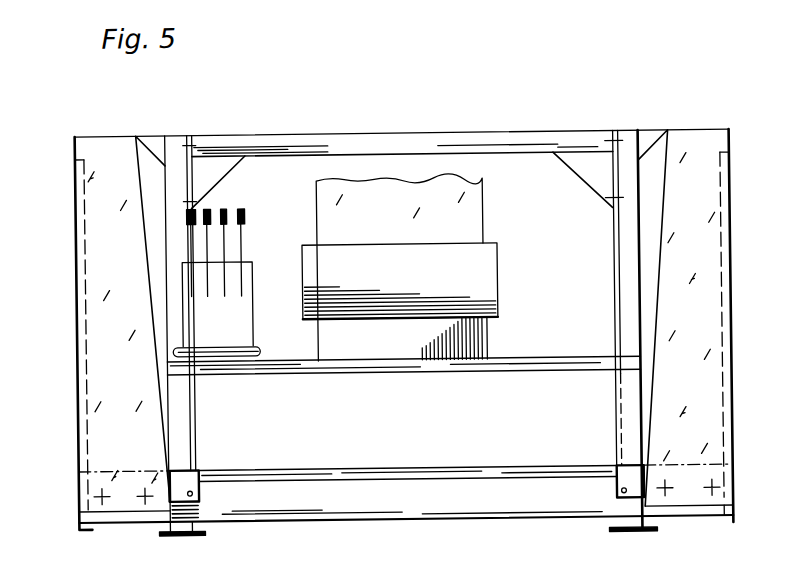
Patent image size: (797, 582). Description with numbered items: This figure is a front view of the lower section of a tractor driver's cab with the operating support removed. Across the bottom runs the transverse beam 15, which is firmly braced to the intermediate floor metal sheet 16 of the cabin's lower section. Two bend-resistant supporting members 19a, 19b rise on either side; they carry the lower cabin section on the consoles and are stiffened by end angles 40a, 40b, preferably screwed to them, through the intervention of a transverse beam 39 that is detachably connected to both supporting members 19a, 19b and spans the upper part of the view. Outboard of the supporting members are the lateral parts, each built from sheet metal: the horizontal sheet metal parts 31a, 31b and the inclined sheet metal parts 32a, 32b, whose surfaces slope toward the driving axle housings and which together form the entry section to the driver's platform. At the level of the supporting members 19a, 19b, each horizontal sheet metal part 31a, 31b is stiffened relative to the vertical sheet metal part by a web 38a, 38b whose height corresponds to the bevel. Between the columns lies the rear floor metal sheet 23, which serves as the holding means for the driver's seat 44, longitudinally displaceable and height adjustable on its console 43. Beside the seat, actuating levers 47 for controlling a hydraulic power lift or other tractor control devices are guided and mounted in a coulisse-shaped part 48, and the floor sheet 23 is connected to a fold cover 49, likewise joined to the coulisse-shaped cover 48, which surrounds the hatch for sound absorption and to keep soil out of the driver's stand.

The transverse beam 15 is at (416, 516).
The intermediate floor metal sheet 16 is at (321, 477).
The bend-resistant supporting member 19a is at (635, 278).
The bend-resistant supporting member 19b is at (173, 244).
The rear floor metal sheet 23 is at (389, 366).
The horizontal sheet metal part 31a is at (708, 127).
The horizontal sheet metal part 31b is at (102, 140).
The inclined sheet metal part 32a is at (708, 333).
The inclined sheet metal part 32b is at (104, 324).
The web 38a is at (699, 490).
The web 38b is at (104, 483).
The transverse beam 39 is at (455, 134).
The end angle 40a is at (596, 180).
The end angle 40b is at (219, 177).
The console 43 is at (481, 341).
The driver's seat 44 is at (392, 258).
The actuating levers 47 is at (244, 244).
The coulisse-shaped part 48 is at (241, 313).
The fold cover 49 is at (259, 355).